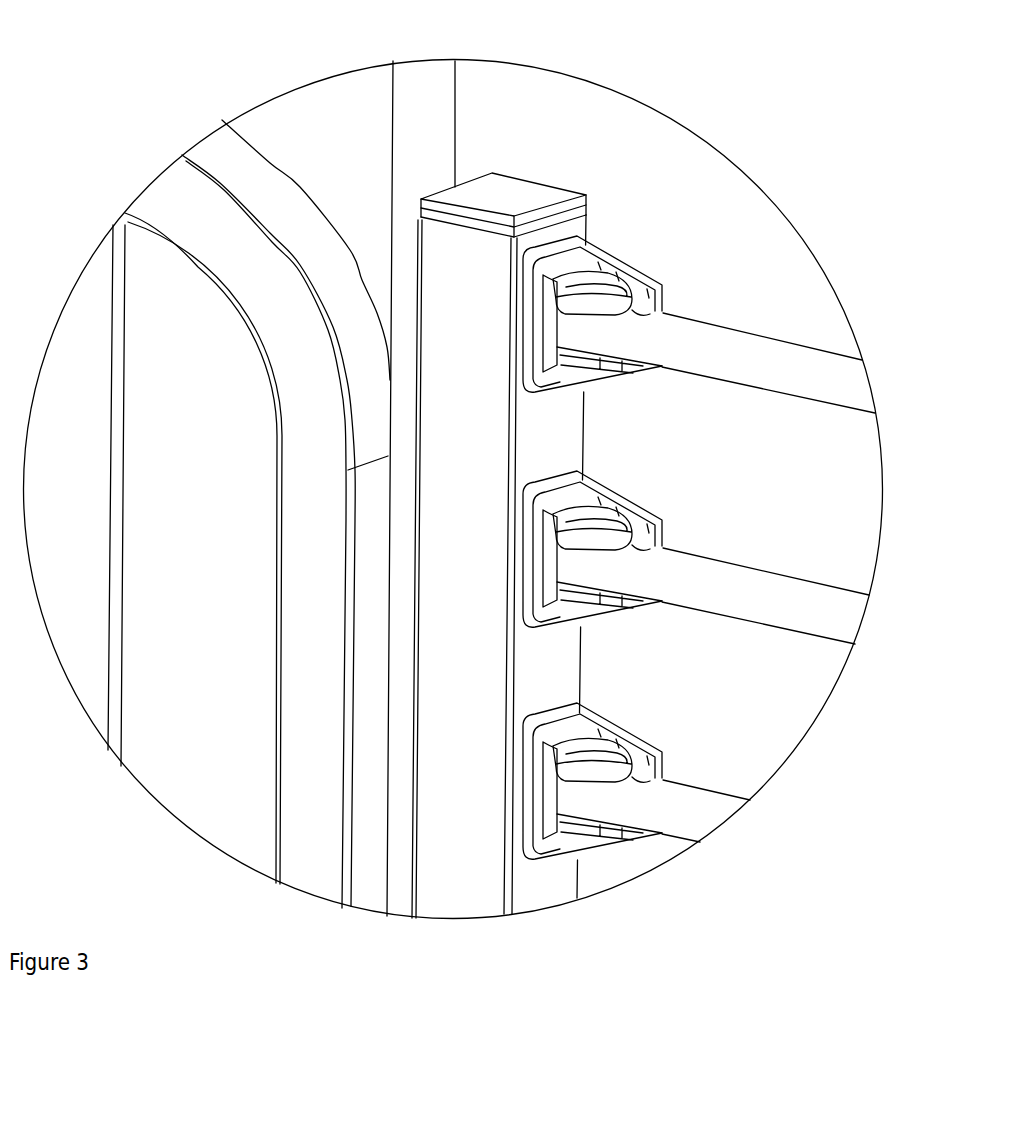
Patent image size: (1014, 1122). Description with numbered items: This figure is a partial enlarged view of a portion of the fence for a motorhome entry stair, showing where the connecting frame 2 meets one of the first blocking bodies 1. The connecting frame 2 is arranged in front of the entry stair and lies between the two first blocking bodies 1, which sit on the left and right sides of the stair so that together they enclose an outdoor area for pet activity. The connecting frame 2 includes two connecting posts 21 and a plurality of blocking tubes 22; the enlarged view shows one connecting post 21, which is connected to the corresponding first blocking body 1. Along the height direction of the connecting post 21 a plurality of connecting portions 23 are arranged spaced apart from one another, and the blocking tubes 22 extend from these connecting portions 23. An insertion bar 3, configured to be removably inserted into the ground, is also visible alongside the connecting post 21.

The first blocking body 1 is at (266, 118).
The connecting frame 2 is at (729, 486).
The insertion bar 3 is at (435, 88).
The connecting post 21 is at (494, 273).
The blocking tube 22 is at (820, 373).
The connecting portion 23 is at (630, 258).